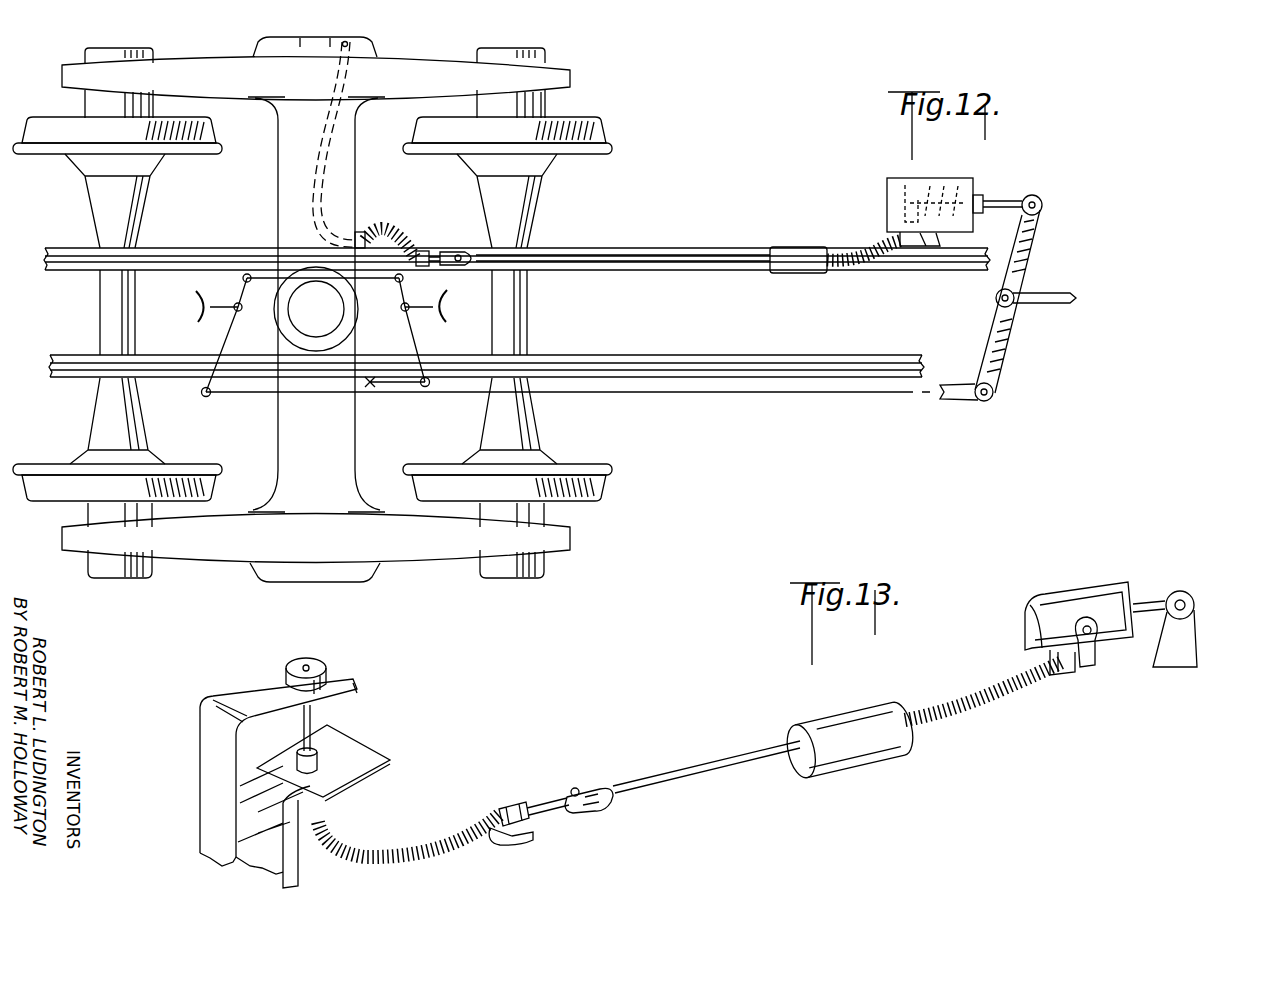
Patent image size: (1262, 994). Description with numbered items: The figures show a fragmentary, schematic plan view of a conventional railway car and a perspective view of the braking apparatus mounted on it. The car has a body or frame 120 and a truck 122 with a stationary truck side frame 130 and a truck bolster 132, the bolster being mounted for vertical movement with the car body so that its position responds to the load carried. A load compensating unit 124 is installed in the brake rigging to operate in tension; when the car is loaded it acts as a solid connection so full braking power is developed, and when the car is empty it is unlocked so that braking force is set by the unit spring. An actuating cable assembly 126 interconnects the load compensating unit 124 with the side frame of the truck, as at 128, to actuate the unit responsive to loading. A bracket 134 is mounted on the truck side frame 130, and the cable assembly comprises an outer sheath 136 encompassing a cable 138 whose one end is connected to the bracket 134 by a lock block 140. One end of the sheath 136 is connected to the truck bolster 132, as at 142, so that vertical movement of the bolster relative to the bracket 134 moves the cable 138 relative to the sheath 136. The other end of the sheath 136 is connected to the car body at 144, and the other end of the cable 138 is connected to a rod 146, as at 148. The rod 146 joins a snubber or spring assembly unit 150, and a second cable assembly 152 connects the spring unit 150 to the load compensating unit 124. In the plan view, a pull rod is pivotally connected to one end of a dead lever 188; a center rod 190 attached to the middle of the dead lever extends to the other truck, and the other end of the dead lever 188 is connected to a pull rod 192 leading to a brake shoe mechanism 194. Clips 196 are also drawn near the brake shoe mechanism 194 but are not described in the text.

In FIG. 12, the body or frame 120 is at (67, 247).
In FIG. 12, the truck 122 is at (612, 99).
In FIG. 12, the load compensating unit 124 is at (903, 163).
In FIG. 13, the load compensating unit 124 is at (1100, 572).
In FIG. 12, the actuating cable assembly 126 is at (556, 276).
In FIG. 13, the actuating cable assembly 126 is at (632, 802).
In FIG. 12, the connection to truck side frame 128 is at (350, 44).
In FIG. 12, the truck side frame 130 is at (204, 552).
In FIG. 13, the truck bolster 132 is at (398, 760).
In FIG. 13, the bracket 134 is at (205, 703).
In FIG. 12, the sheath 136 is at (386, 228).
In FIG. 13, the sheath 136 is at (380, 843).
In FIG. 13, the cable 138 is at (318, 715).
In FIG. 13, the lock block 140 is at (326, 670).
In FIG. 13, the sheath connection to bolster 142 is at (335, 752).
In FIG. 12, the sheath connection to car body 144 is at (425, 250).
In FIG. 13, the sheath connection to car body 144 is at (510, 803).
In FIG. 12, the rod 146 is at (623, 258).
In FIG. 13, the rod 146 is at (717, 767).
In FIG. 12, the cable-to-rod connection 148 is at (465, 267).
In FIG. 13, the cable-to-rod connection 148 is at (590, 785).
In FIG. 12, the snubber or spring assembly unit 150 is at (786, 246).
In FIG. 13, the snubber or spring assembly unit 150 is at (834, 717).
In FIG. 12, the second cable assembly 152 is at (877, 268).
In FIG. 13, the second cable assembly 152 is at (995, 722).
In FIG. 12, the dead lever 188 is at (1041, 232).
In FIG. 13, the dead lever 188 is at (1195, 630).
In FIG. 12, the center rod 190 is at (1058, 293).
In FIG. 12, the pull rod 192 is at (730, 393).
In FIG. 12, the brake shoe mechanism 194 is at (268, 258).
In FIG. 12, the clip 196 is at (194, 292).